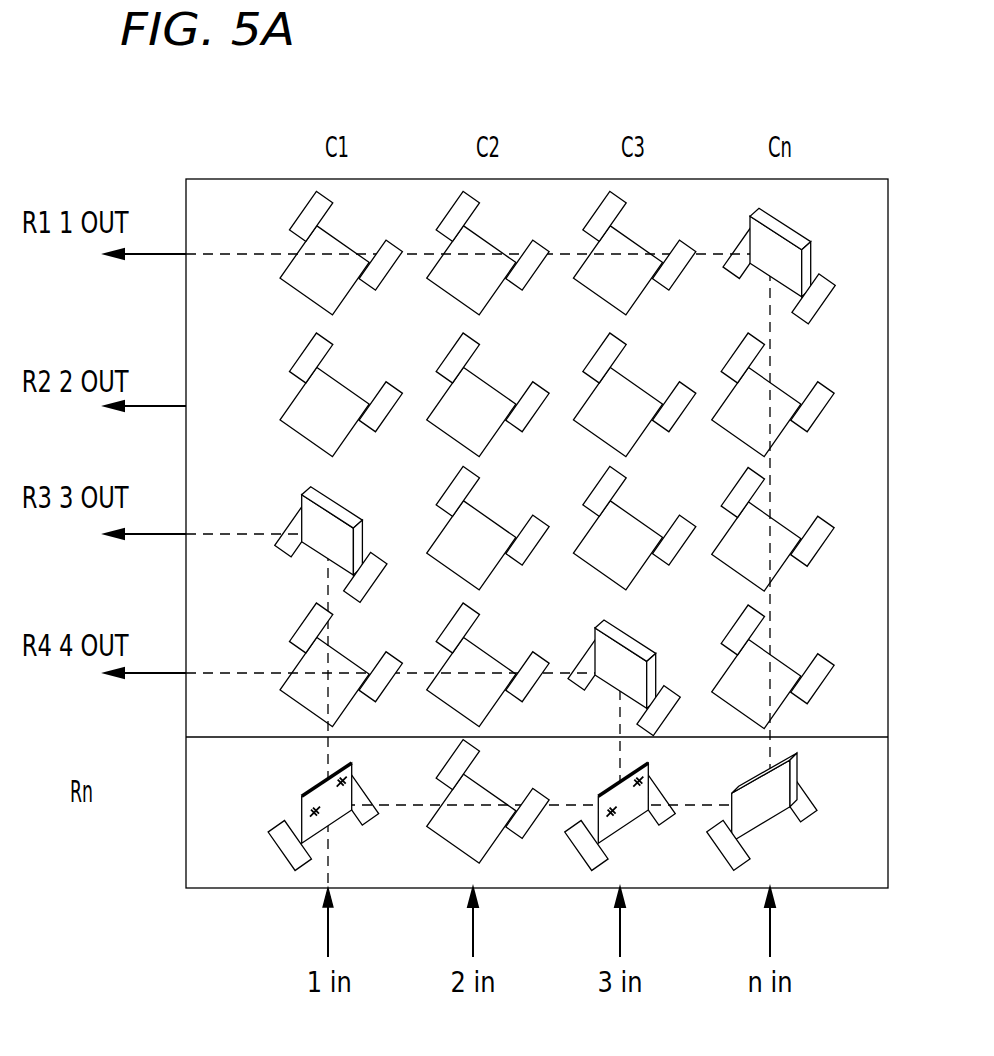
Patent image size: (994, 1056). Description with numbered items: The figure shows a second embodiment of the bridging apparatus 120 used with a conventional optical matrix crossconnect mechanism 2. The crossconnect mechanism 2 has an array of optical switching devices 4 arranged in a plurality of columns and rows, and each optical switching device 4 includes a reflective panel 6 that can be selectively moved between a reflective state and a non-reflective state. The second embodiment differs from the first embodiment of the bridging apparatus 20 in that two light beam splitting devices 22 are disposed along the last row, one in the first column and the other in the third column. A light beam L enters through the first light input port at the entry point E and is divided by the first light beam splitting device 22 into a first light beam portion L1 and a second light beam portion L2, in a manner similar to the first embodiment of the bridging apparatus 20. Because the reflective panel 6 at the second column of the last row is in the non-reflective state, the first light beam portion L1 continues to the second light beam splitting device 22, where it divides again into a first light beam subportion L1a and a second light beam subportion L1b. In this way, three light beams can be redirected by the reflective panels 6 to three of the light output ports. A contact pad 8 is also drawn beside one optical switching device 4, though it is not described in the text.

The optical matrix crossconnect mechanism 2 is at (223, 190).
The optical switching device 4 is at (339, 400).
The reflective panel 6 is at (472, 467).
The contact pad 8 is at (383, 410).
The bridging apparatus 20 is at (464, 809).
The light beam splitting device 22 is at (301, 798).
The bridging apparatus 120 is at (190, 845).
The light beam L is at (330, 860).
The first light beam portion L1 is at (478, 807).
The second light beam portion L2 is at (328, 593).
The first light beam subportion L1a is at (480, 672).
The second light beam subportion L1b is at (773, 647).
The input port E is at (323, 888).